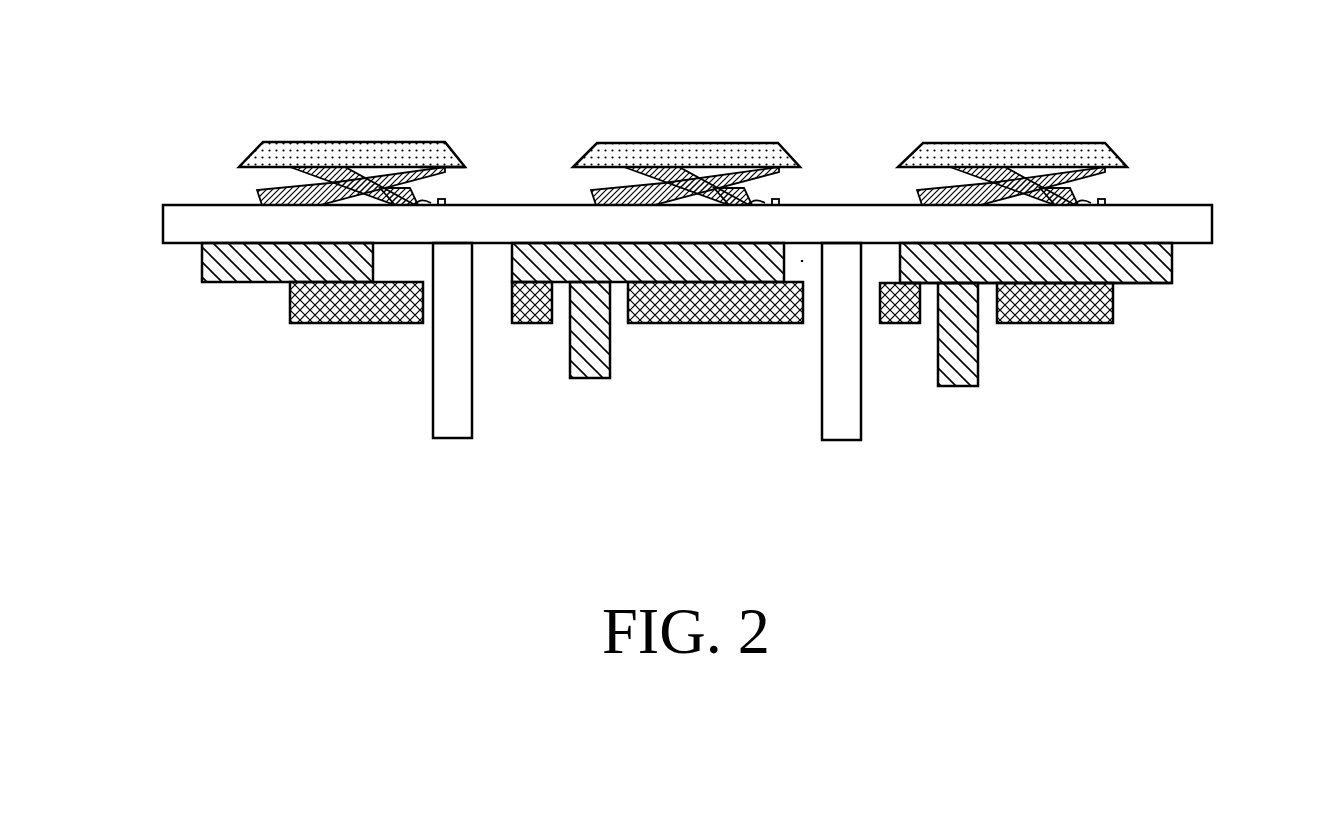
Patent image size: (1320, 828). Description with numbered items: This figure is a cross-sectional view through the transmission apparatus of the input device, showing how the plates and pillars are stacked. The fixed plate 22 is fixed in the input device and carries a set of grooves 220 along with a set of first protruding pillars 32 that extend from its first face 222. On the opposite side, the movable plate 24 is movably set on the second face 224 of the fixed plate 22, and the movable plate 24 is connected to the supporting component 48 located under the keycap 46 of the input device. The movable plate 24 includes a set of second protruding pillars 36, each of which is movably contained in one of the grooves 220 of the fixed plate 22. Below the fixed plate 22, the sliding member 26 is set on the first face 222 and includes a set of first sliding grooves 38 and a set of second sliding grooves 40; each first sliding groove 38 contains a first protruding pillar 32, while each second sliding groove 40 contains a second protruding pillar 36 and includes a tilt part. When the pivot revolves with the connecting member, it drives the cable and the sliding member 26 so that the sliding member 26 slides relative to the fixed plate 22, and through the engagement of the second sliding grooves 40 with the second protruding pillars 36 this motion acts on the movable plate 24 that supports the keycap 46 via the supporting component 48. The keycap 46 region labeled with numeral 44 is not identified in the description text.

The fixed plate 22 is at (243, 258).
The movable plate 24 is at (263, 222).
The sliding member 26 is at (380, 305).
The first protruding pillar 32 is at (960, 347).
The second protruding pillar 36 is at (448, 400).
The first sliding groove 38 is at (620, 313).
The second sliding groove 40 is at (868, 307).
The mirror plate 44 is at (377, 142).
The keycap 46 is at (446, 156).
The supporting component 48 is at (403, 181).
The groove 220 is at (802, 260).
The first face 222 is at (1133, 283).
The second face 224 is at (1148, 258).